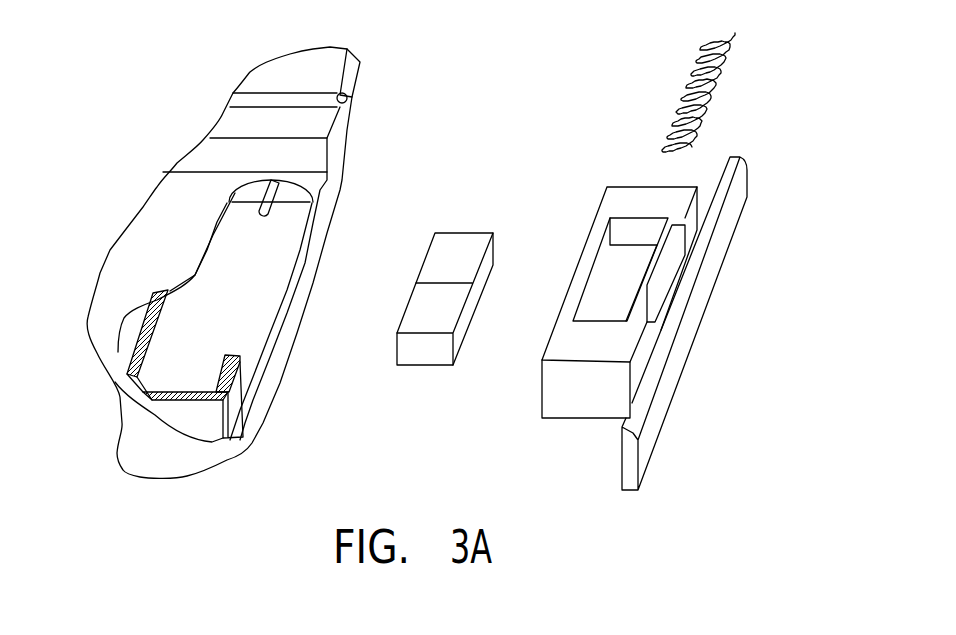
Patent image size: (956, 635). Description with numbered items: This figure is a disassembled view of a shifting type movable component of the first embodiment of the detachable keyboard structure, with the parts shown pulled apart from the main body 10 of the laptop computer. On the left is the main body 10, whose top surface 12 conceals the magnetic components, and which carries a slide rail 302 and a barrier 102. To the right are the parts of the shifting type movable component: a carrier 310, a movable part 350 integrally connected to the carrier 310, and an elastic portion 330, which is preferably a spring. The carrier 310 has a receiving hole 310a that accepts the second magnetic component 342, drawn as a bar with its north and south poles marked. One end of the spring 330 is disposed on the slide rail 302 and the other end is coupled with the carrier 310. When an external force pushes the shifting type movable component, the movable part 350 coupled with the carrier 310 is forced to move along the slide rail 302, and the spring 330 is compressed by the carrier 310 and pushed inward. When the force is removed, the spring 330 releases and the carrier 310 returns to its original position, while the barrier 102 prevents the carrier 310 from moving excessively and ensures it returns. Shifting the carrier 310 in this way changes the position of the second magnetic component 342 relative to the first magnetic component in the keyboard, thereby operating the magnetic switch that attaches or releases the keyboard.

The main body 10 is at (347, 175).
The top surface 12 is at (133, 423).
The barrier 102 is at (197, 422).
The slide rail 302 is at (263, 217).
The carrier 310 is at (567, 318).
The receiving hole 310a is at (619, 283).
The elastic portion 330 is at (677, 90).
The second magnetic component 342 is at (425, 263).
The movable part 350 is at (732, 242).